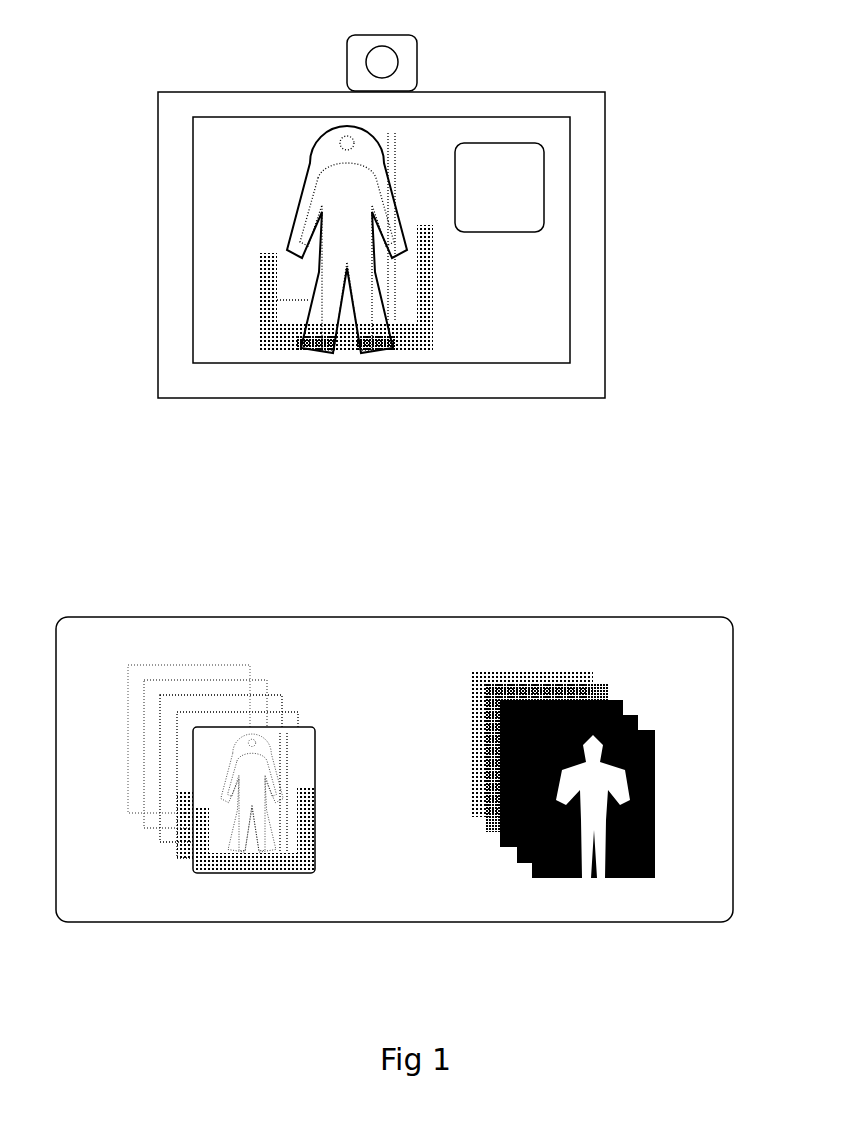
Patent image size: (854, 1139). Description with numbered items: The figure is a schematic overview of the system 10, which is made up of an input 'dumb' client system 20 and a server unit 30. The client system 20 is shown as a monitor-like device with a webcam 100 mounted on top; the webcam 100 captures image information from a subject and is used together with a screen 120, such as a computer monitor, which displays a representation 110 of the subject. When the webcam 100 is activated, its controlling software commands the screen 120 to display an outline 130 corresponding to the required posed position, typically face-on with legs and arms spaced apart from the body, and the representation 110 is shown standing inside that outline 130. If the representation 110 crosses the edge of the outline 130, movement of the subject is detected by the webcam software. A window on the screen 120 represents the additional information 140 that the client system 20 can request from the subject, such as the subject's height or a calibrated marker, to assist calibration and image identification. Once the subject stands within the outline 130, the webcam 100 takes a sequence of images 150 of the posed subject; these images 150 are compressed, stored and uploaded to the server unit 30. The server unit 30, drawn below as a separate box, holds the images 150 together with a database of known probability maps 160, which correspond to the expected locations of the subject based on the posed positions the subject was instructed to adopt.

The system 10 is at (650, 453).
The client system 20 is at (158, 212).
The server unit 30 is at (407, 613).
The webcam 100 is at (403, 59).
The representation 110 is at (350, 224).
The screen 120 is at (220, 103).
The outline 130 is at (293, 235).
The additional information 140 is at (527, 190).
The sequence of images 150 is at (305, 690).
The probability maps 160 is at (490, 852).